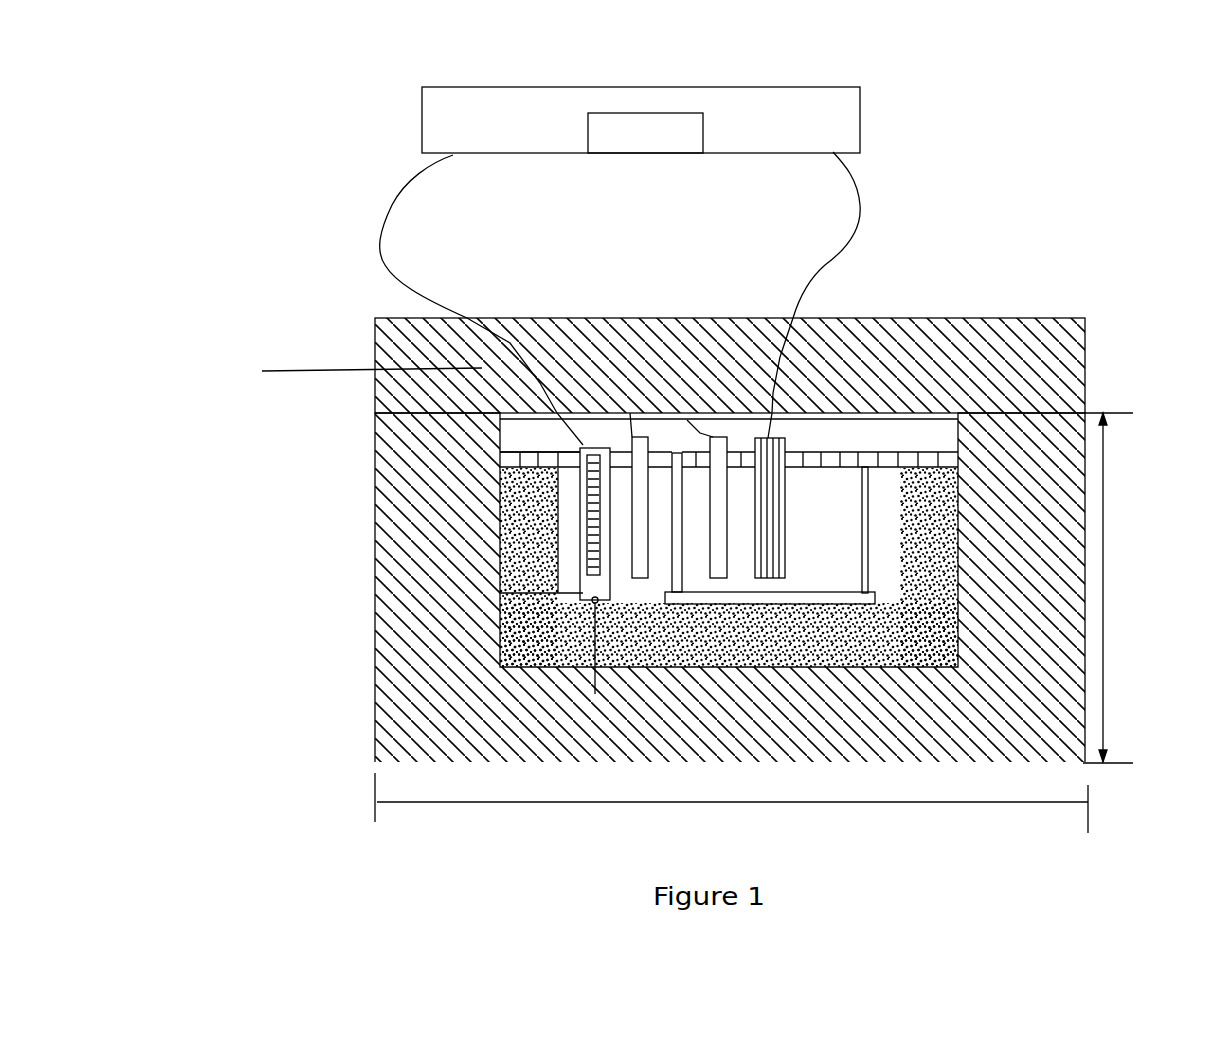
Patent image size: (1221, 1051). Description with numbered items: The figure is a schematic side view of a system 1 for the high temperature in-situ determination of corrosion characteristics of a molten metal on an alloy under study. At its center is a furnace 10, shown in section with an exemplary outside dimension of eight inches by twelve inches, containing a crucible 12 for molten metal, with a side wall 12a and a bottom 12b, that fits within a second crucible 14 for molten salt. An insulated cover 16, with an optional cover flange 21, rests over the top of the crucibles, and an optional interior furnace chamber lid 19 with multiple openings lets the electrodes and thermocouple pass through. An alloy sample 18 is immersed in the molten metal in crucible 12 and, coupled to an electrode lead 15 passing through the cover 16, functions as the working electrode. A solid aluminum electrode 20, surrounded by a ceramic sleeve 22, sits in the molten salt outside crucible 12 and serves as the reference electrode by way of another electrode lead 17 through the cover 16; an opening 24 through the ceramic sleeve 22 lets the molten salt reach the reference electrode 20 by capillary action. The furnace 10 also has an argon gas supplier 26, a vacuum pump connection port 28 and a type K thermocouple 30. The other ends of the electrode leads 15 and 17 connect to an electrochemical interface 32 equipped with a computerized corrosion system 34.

The system 1 is at (208, 202).
The furnace 10 is at (437, 715).
The crucible 12 is at (933, 563).
The side wall 12a is at (868, 535).
The bottom 12b is at (877, 607).
The crucible 14 is at (500, 527).
The electrode lead 15 is at (872, 200).
The insulated cover 16 is at (375, 318).
The electrode lead 17 is at (390, 202).
The alloy sample 18 is at (790, 507).
The interior furnace chamber lid 19 is at (500, 505).
The solid aluminum electrode 20 is at (585, 434).
The cover flange 21 is at (338, 392).
The ceramic sleeve 22 is at (500, 592).
The opening 24 is at (595, 694).
The argon gas supplier 26 is at (730, 437).
The vacuum pump connection port 28 is at (855, 412).
The type K thermocouple 30 is at (610, 450).
The electrochemical interface 32 is at (640, 86).
The computerized corrosion system 34 is at (645, 133).